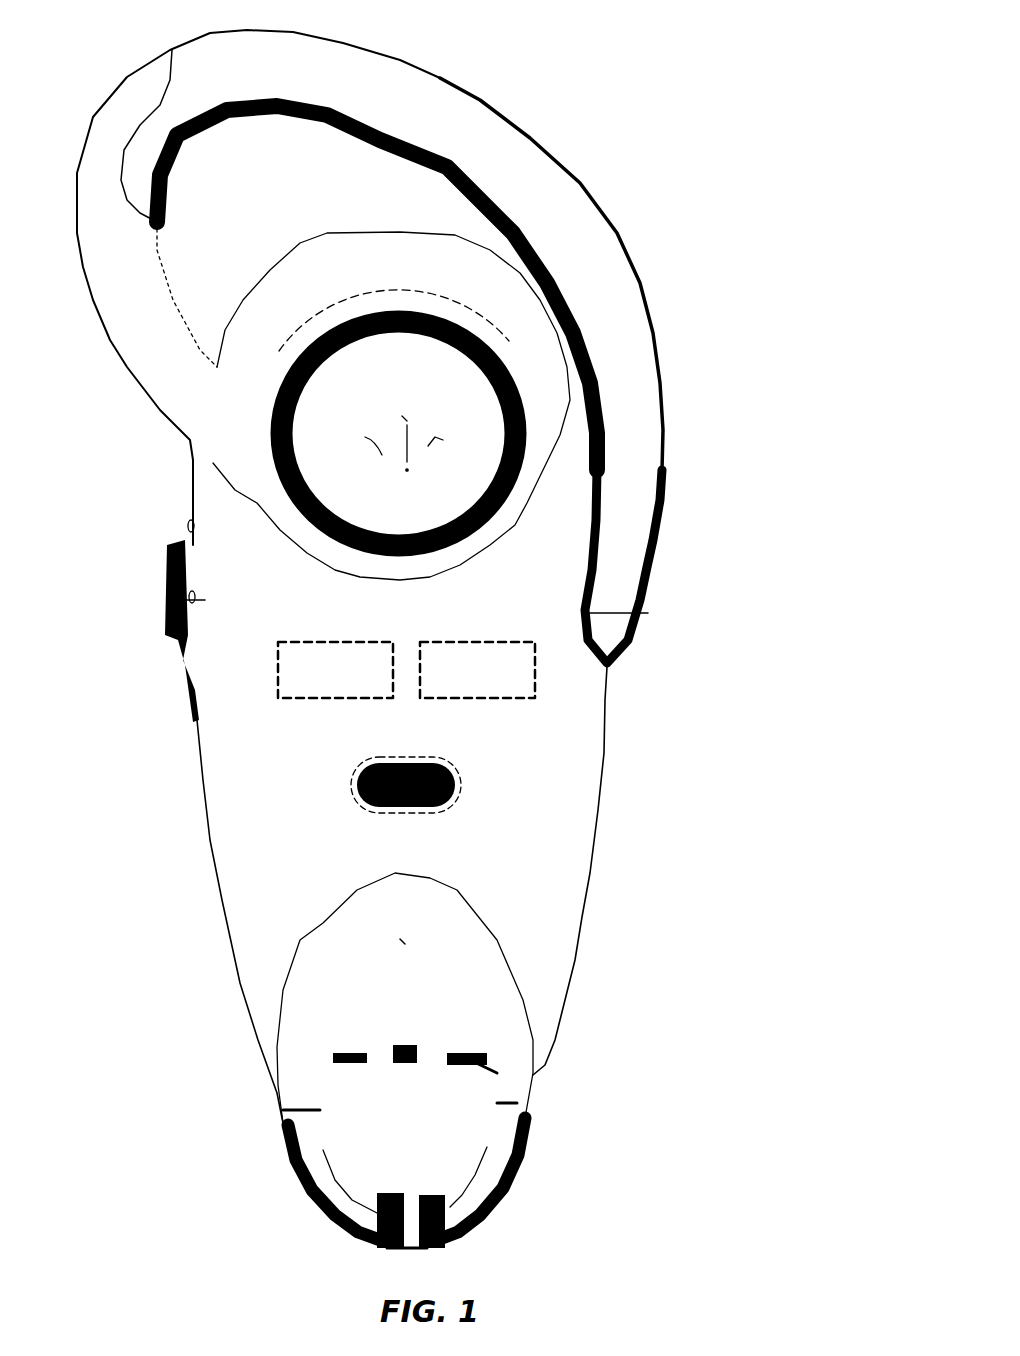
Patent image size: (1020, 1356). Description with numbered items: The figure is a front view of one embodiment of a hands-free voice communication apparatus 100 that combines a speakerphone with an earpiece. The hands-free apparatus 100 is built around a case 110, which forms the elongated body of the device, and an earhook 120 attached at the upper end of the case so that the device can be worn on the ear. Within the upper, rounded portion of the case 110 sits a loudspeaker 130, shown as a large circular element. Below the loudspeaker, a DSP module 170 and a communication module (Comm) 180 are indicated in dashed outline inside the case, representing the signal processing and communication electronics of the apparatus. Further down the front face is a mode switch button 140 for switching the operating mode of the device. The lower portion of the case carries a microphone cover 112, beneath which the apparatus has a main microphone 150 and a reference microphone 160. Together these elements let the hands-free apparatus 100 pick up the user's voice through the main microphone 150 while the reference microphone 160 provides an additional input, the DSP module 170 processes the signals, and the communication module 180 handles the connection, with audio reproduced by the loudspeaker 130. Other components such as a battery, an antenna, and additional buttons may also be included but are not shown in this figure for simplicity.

The hands-free voice communication apparatus 100 is at (708, 45).
The case 110 is at (598, 812).
The microphone cover 112 is at (290, 990).
The earhook 120 is at (582, 183).
The loudspeaker 130 is at (407, 425).
The mode switch button 140 is at (452, 776).
The main microphone 150 is at (417, 1133).
The reference microphone 160 is at (405, 945).
The DSP module 170 is at (339, 640).
The communication module 180 is at (479, 640).